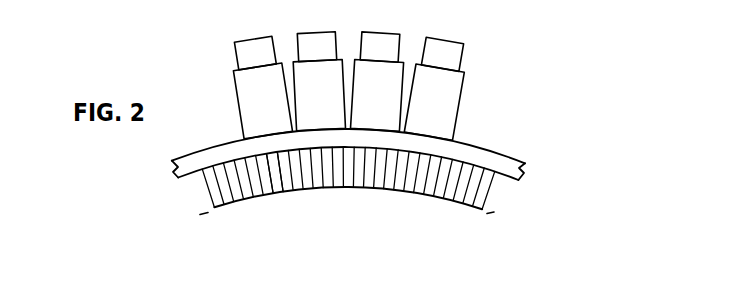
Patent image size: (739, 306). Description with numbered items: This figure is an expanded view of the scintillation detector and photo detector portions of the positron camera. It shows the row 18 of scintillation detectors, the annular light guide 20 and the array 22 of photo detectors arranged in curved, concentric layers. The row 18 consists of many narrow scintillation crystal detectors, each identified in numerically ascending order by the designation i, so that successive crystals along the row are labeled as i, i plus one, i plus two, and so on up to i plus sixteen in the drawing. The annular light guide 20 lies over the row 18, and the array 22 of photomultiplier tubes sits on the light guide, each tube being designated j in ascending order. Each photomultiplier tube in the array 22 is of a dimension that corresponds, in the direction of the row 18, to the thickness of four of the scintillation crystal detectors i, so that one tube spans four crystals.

The array of photo detectors 22 is at (480, 112).
The annular light guide 20 is at (503, 168).
The row of scintillation detectors 18 is at (391, 222).
The scintillation detector i is at (263, 193).